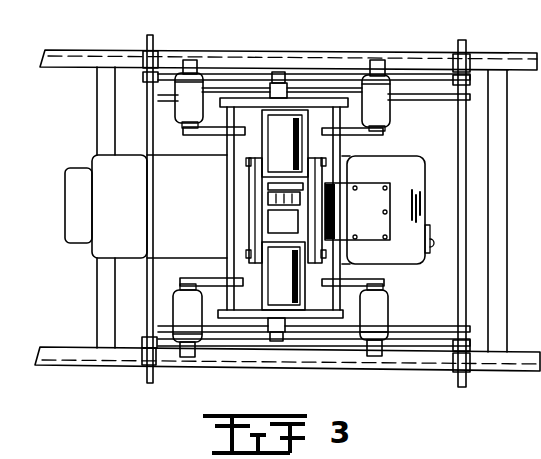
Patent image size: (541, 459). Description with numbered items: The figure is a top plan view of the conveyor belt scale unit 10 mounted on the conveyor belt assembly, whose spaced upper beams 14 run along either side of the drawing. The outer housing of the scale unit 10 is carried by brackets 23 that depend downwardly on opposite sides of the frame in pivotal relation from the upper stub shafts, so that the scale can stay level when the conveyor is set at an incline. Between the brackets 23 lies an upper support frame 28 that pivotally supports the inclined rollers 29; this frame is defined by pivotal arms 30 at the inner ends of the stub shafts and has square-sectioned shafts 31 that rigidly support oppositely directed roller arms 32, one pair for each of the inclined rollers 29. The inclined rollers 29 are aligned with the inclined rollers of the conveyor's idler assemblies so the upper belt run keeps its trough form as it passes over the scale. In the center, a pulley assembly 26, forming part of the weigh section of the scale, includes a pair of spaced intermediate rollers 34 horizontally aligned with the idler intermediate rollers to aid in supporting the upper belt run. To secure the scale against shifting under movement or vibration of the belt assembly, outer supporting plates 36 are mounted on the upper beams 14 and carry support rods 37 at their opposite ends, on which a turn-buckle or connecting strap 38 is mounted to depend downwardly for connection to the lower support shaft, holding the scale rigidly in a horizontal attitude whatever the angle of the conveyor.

The conveyor belt scale unit 10 is at (427, 181).
The upper beam 14 is at (103, 50).
The bracket 23 is at (287, 83).
The pulley assembly 26 is at (268, 195).
The upper support frame 28 is at (232, 98).
The inclined roller 29 is at (176, 105).
The pivotal arm 30 is at (252, 100).
The square-sectioned shaft 31 is at (228, 166).
The roller arm 32 is at (383, 131).
The intermediate roller 34 is at (293, 153).
The outer supporting plate 36 is at (143, 76).
The support rod 37 is at (145, 123).
The connecting strap 38 is at (443, 100).